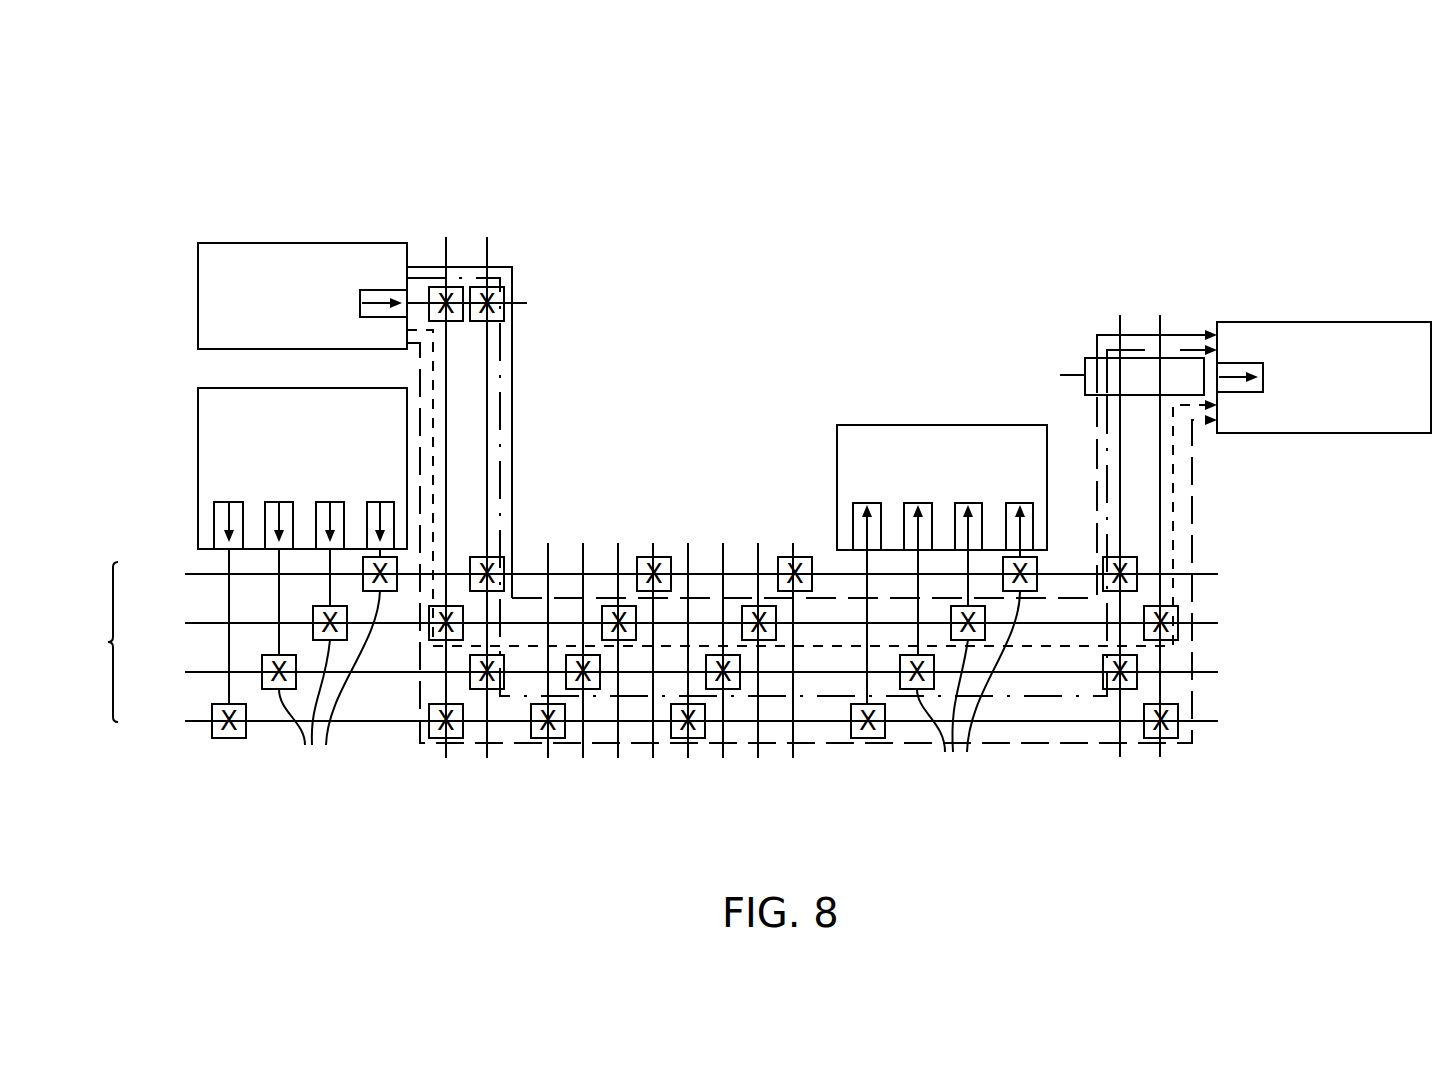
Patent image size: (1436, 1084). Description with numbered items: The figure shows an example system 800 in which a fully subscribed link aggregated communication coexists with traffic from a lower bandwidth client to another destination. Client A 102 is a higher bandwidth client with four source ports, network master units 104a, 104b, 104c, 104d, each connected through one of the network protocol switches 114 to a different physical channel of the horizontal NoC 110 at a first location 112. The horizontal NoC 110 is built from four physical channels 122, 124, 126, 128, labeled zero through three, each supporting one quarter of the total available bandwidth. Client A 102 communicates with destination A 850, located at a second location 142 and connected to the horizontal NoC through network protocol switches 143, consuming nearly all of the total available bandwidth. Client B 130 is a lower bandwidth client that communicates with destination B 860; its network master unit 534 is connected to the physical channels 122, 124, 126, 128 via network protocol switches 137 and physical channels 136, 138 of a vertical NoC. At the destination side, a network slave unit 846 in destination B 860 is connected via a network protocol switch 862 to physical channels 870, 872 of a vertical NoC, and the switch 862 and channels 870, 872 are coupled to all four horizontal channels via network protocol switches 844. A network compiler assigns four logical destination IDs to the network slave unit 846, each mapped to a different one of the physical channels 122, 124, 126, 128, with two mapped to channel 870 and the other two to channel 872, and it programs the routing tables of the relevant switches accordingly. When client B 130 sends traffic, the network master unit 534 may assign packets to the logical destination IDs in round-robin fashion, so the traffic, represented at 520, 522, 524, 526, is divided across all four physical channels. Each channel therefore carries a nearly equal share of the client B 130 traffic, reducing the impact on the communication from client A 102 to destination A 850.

The system 800 is at (213, 122).
The client B 130 is at (368, 243).
The network master unit 534 is at (360, 300).
The physical channel of vertical NoC 136 is at (447, 245).
The physical channel of vertical NoC 138 is at (490, 240).
The network protocol switch 137 is at (455, 322).
The traffic from client B to destination B 520 is at (428, 366).
The traffic from client B to destination B 522 is at (420, 742).
The traffic from client B to destination B 524 is at (515, 463).
The traffic from client B to destination B 526 is at (500, 498).
The client A 102 is at (197, 418).
The network master unit 104a is at (240, 502).
The network master unit 104b is at (287, 502).
The network master unit 104c is at (327, 502).
The network master unit 104d is at (374, 502).
The horizontal NoC 110 is at (93, 642).
The physical channel 122 is at (205, 577).
The physical channel 124 is at (205, 626).
The physical channel 126 is at (205, 675).
The physical channel 128 is at (205, 724).
The first location 112 is at (442, 847).
The network protocol switches 114 is at (245, 730).
The destination A 850 is at (990, 425).
The second location 142 is at (885, 840).
The network protocol switches 143 is at (885, 735).
The network protocol switch 862 is at (1085, 365).
The physical channel of vertical NoC 870 is at (1121, 318).
The physical channel of vertical NoC 872 is at (1161, 318).
The network protocol switches 844 is at (1137, 585).
The destination B 860 is at (1378, 322).
The network slave unit 846 is at (1263, 383).